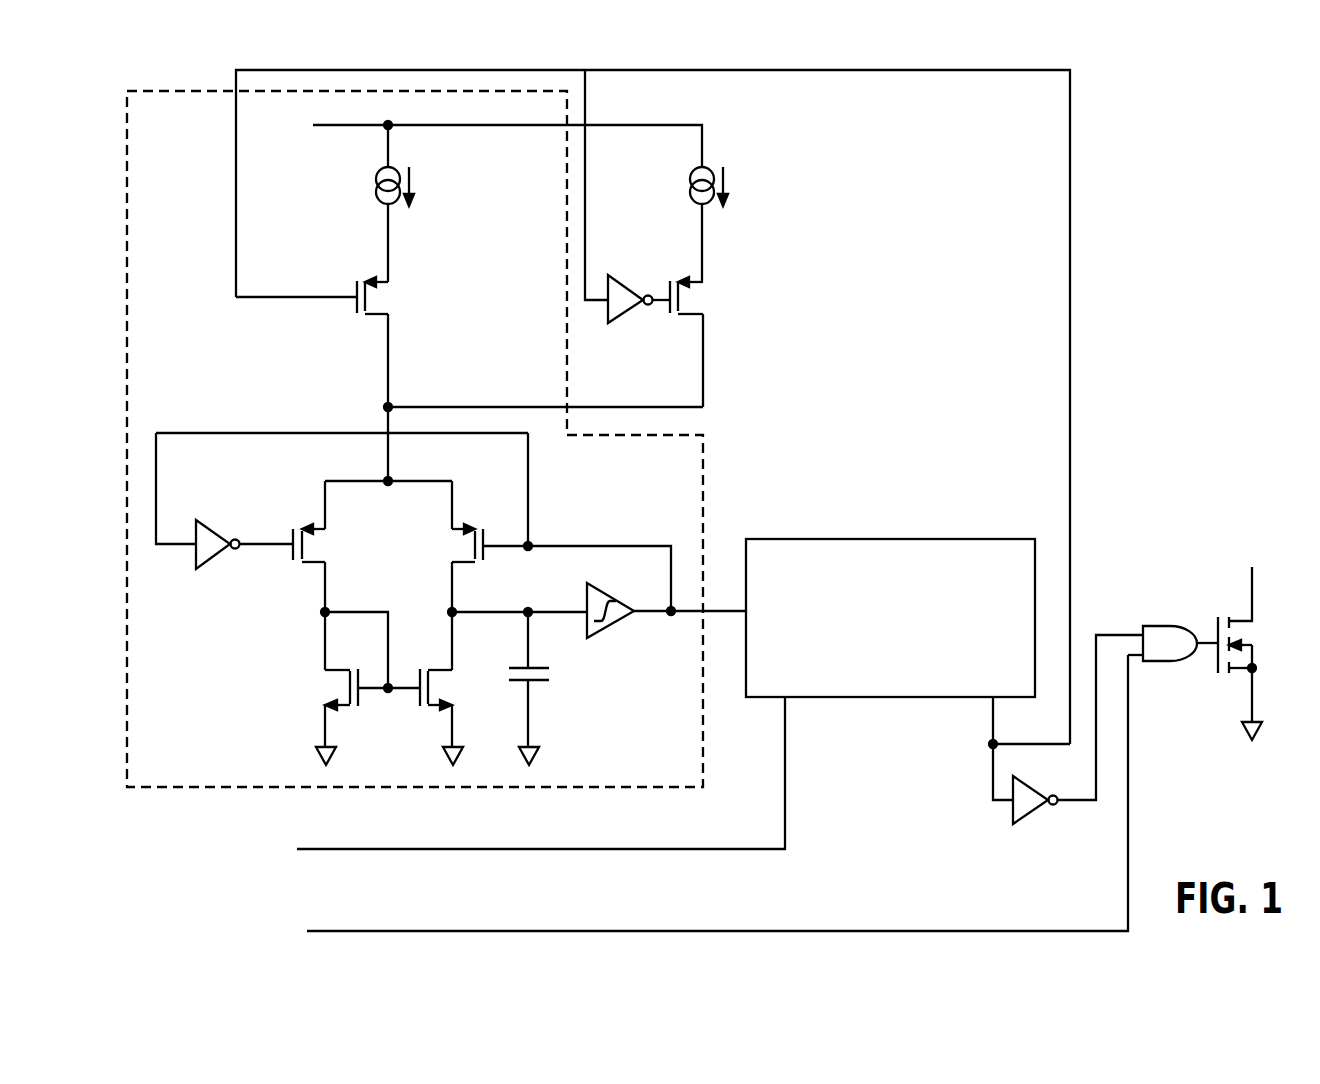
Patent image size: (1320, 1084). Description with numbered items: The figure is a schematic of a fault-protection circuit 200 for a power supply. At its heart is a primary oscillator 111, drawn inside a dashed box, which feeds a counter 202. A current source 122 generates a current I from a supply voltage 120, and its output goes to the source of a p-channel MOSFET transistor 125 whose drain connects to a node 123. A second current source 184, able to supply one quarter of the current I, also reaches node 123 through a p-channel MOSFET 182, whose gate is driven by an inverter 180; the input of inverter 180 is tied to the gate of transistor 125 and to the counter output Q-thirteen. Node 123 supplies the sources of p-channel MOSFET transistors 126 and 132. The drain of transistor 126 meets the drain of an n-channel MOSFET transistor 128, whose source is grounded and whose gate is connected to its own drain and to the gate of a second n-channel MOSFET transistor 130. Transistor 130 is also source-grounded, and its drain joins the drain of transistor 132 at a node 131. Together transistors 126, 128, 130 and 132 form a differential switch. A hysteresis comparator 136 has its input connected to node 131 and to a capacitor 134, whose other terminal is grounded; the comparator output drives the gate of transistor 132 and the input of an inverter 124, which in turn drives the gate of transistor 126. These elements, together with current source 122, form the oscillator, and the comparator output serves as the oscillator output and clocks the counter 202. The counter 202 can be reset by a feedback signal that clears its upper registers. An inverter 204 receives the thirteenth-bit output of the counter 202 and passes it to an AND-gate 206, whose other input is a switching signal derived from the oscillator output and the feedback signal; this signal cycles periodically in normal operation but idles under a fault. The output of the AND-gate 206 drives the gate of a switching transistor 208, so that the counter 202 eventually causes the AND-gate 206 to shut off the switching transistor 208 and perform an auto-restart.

The fault-protection circuit 200 is at (1188, 161).
The primary oscillator 111 is at (434, 455).
The supply voltage 120 is at (477, 137).
The current source 122 is at (383, 224).
The second current source 184 is at (704, 224).
The p-channel MOSFET transistor 125 is at (322, 342).
The inverter 180 is at (639, 308).
The p-channel MOSFET 182 is at (698, 342).
The node 123 is at (514, 431).
The inverter 124 is at (342, 510).
The p-channel MOSFET transistor 126 is at (318, 546).
The p-channel MOSFET transistor 132 is at (551, 522).
The node 131 is at (517, 600).
The n-channel MOSFET transistor 128 is at (348, 686).
The n-channel MOSFET transistor 130 is at (414, 688).
The capacitor 134 is at (540, 686).
The hysteresis comparator 136 is at (666, 621).
The counter 202 is at (632, 707).
The inverter 204 is at (1078, 739).
The AND-gate 206 is at (704, 786).
The switching transistor 208 is at (1254, 653).